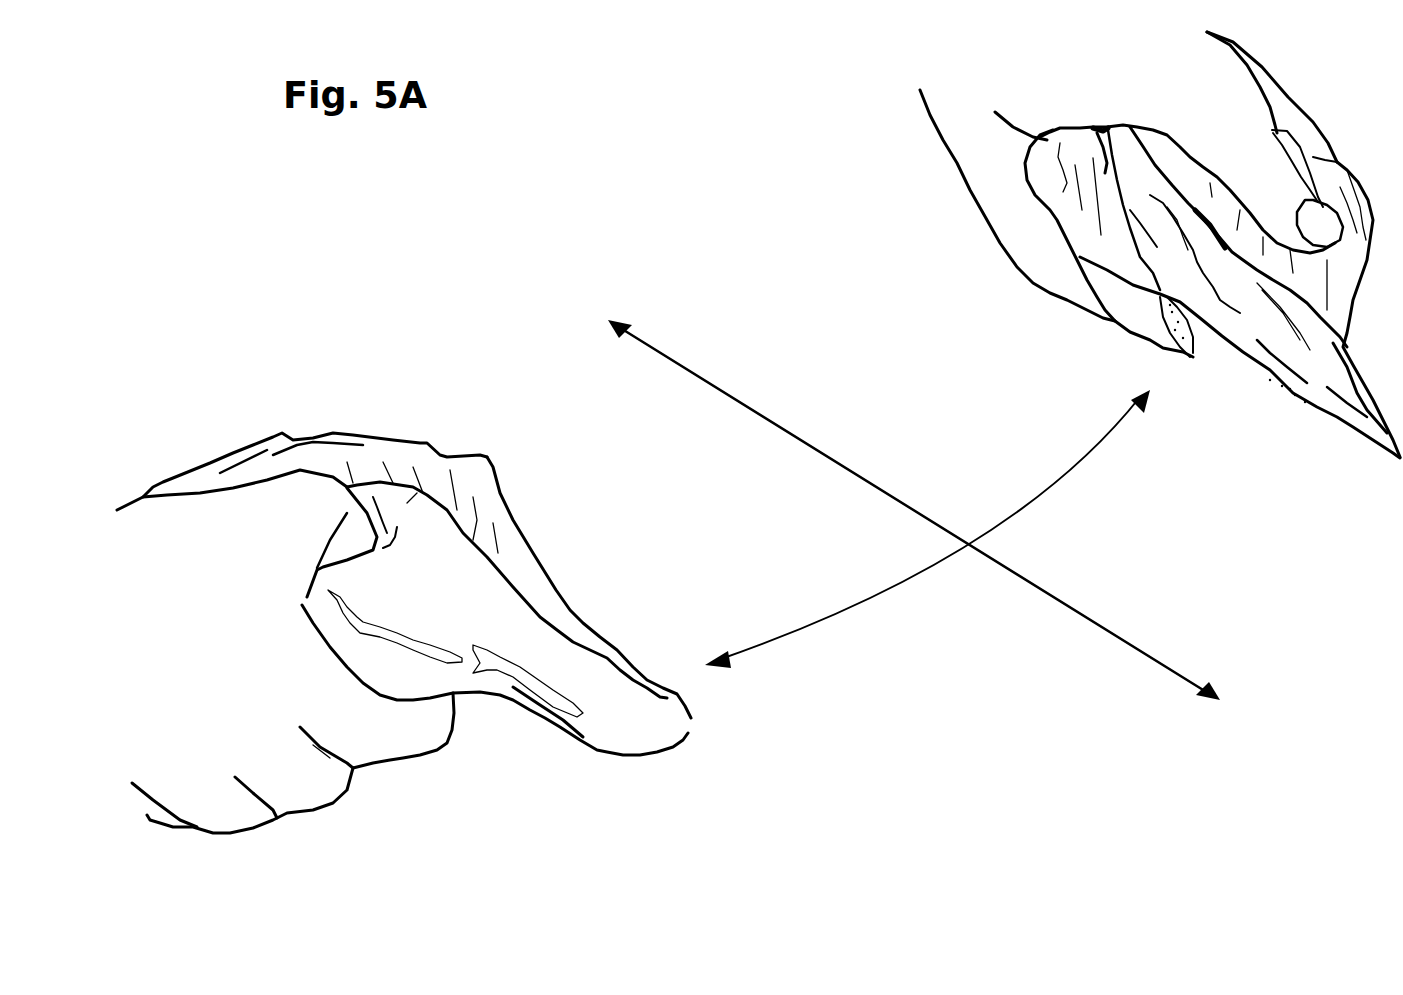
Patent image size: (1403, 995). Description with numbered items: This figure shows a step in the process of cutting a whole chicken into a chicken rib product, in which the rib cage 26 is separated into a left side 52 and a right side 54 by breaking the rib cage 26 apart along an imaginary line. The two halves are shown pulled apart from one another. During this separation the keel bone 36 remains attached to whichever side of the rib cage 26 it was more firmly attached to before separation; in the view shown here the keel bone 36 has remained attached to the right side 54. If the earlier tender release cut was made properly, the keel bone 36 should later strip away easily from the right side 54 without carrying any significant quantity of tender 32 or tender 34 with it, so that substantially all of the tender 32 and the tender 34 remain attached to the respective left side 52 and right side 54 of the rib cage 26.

The rib cage 26 is at (445, 487).
The tender 32 is at (573, 683).
The tender 34 is at (1243, 333).
The keel bone 36 is at (1300, 403).
The left side 52 is at (263, 438).
The right side 54 is at (1287, 97).